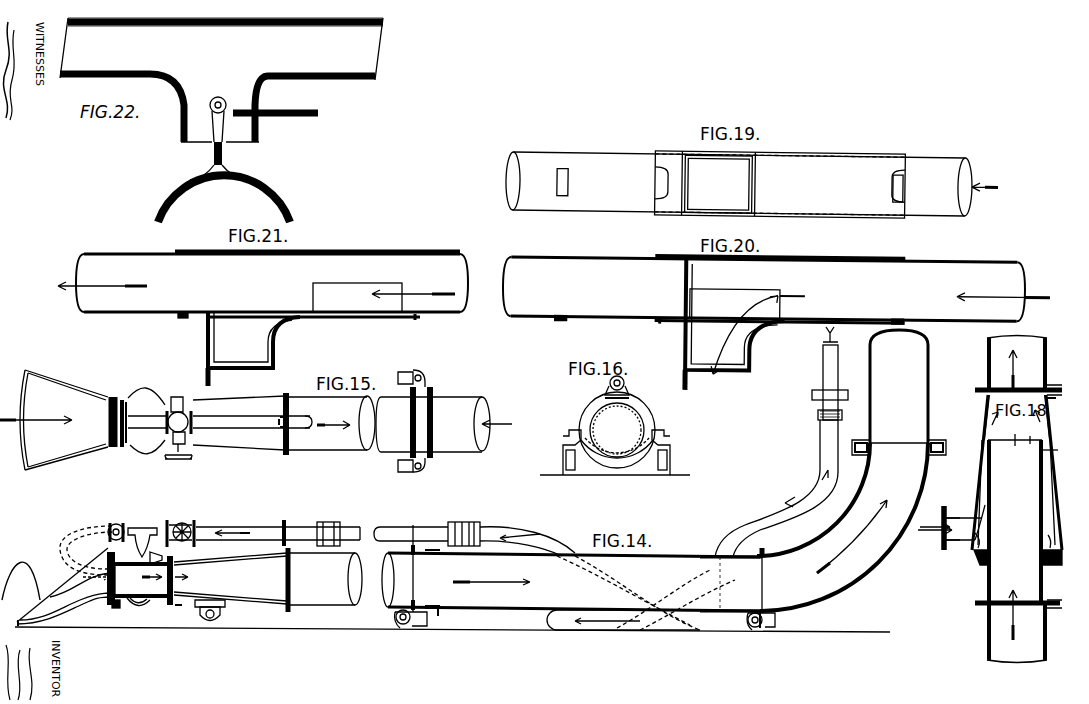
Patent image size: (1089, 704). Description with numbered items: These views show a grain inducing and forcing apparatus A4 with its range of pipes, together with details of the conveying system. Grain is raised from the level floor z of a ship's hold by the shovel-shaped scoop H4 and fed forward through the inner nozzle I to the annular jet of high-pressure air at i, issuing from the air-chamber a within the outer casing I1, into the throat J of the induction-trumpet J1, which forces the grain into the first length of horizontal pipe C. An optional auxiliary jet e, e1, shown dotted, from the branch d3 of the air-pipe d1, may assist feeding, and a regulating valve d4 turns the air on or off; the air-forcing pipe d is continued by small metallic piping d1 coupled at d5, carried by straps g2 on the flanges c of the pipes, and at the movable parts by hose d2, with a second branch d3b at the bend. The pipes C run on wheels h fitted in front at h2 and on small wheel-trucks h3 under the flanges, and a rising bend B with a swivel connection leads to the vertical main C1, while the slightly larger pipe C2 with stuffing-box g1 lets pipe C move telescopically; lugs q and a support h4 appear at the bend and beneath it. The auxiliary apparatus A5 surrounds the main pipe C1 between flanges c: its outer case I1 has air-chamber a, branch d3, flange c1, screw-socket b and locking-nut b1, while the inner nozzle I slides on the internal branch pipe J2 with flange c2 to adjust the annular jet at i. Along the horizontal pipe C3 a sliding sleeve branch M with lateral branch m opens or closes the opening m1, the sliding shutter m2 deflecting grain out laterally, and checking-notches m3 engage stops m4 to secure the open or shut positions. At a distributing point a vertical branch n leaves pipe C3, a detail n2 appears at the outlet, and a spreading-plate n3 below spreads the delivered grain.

In FIG. 22, the horizontal grain-conveying pipe C3 is at (221, 80).
In FIG. 19, the horizontal grain-conveying pipe C3 is at (752, 175).
In FIG. 21, the horizontal grain-conveying pipe C3 is at (263, 283).
In FIG. 20, the horizontal grain-conveying pipe C3 is at (777, 289).
In FIG. 22, the vertical branch n is at (225, 49).
In FIG. 22, the bar n2 is at (276, 124).
In FIG. 22, the spreading-plate n3 is at (224, 159).
In FIG. 19, the sliding sleeve branch M is at (780, 184).
In FIG. 21, the sliding sleeve branch M is at (317, 292).
In FIG. 20, the sliding sleeve branch M is at (779, 299).
In FIG. 14, the sliding sleeve branch M is at (803, 329).
In FIG. 19, the lateral branch m is at (719, 184).
In FIG. 21, the lateral branch m is at (254, 340).
In FIG. 20, the lateral branch m is at (735, 315).
In FIG. 21, the opening m1 is at (364, 297).
In FIG. 20, the opening m1 is at (747, 332).
In FIG. 19, the sliding shutter m2 is at (719, 183).
In FIG. 21, the sliding shutter m2 is at (218, 377).
In FIG. 20, the sliding shutter m2 is at (697, 329).
In FIG. 19, the checking-notch m3 is at (780, 184).
In FIG. 21, the checking-notch m3 is at (426, 323).
In FIG. 20, the checking-notch m3 is at (657, 326).
In FIG. 19, the stop m4 is at (731, 185).
In FIG. 21, the stop m4 is at (180, 322).
In FIG. 20, the stop m4 is at (727, 318).
In FIG. 15, the shovel-shaped scoop H4 is at (54, 420).
In FIG. 14, the shovel-shaped scoop H4 is at (63, 587).
In FIG. 15, the grain inducing and forcing apparatus A4 is at (120, 408).
In FIG. 14, the grain inducing and forcing apparatus A4 is at (265, 561).
In FIG. 18, the auxiliary induction and forcing apparatus A5 is at (1011, 392).
In FIG. 15, the air-chamber a is at (146, 418).
In FIG. 18, the air-chamber a is at (1012, 538).
In FIG. 15, the screw-socket b is at (122, 414).
In FIG. 18, the screw-socket b is at (976, 559).
In FIG. 14, the screw-socket b is at (138, 610).
In FIG. 15, the locking-nut b1 is at (120, 452).
In FIG. 18, the locking-nut b1 is at (1052, 562).
In FIG. 14, the locking-nut b1 is at (117, 611).
In FIG. 16, the air-forcing pipe d is at (611, 385).
In FIG. 15, the air-pipe d1 is at (252, 417).
In FIG. 14, the air-pipe d1 is at (611, 434).
In FIG. 14, the hose d2 is at (659, 525).
In FIG. 15, the air branch d3 is at (147, 420).
In FIG. 18, the air branch d3 is at (952, 523).
In FIG. 14, the air branch d3 is at (142, 533).
In FIG. 14, the air branch d3b is at (939, 520).
In FIG. 15, the regulating valve d4 is at (183, 453).
In FIG. 14, the regulating valve d4 is at (180, 524).
In FIG. 14, the coupling d5 is at (398, 525).
In FIG. 14, the auxiliary air-jet pipe e is at (81, 561).
In FIG. 14, the auxiliary air-jet valve e1 is at (116, 525).
In FIG. 14, the inner nozzle I is at (139, 578).
In FIG. 18, the outer case I1 is at (1014, 472).
In FIG. 18, the annular air-jet i is at (1051, 450).
In FIG. 14, the annular air-jet i is at (156, 553).
In FIG. 15, the throat J is at (179, 420).
In FIG. 18, the throat J is at (1017, 420).
In FIG. 15, the induction-trumpet J1 is at (239, 418).
In FIG. 14, the induction-trumpet J1 is at (228, 579).
In FIG. 18, the internal branch pipe J2 is at (1015, 522).
In FIG. 15, the flange c is at (358, 419).
In FIG. 16, the flange c is at (617, 430).
In FIG. 18, the flange c is at (1054, 499).
In FIG. 14, the flange c is at (531, 581).
In FIG. 18, the flange c1 is at (1054, 403).
In FIG. 18, the flange c2 is at (1018, 593).
In FIG. 14, the stuffing-box g1 is at (439, 568).
In FIG. 15, the strap g2 is at (276, 423).
In FIG. 16, the strap g2 is at (621, 387).
In FIG. 14, the strap g2 is at (292, 526).
In FIG. 15, the horizontal grain pipe C is at (400, 424).
In FIG. 16, the horizontal grain pipe C is at (617, 430).
In FIG. 14, the horizontal grain pipe C is at (525, 591).
In FIG. 18, the vertical rising main pipe C1 is at (1017, 499).
In FIG. 14, the vertical rising main pipe C1 is at (906, 386).
In FIG. 14, the telescopic pipe C2 is at (731, 584).
In FIG. 14, the rising bend B is at (842, 527).
In FIG. 14, the lug q is at (903, 441).
In FIG. 15, the wheel h is at (398, 418).
In FIG. 16, the wheel h is at (615, 453).
In FIG. 14, the wheel h is at (486, 626).
In FIG. 14, the front wheel position h2 is at (218, 610).
In FIG. 15, the wheel-truck h3 is at (426, 420).
In FIG. 14, the wheel-truck h3 is at (434, 618).
In FIG. 14, the support h4 is at (772, 620).
In FIG. 14, the floor z is at (452, 624).